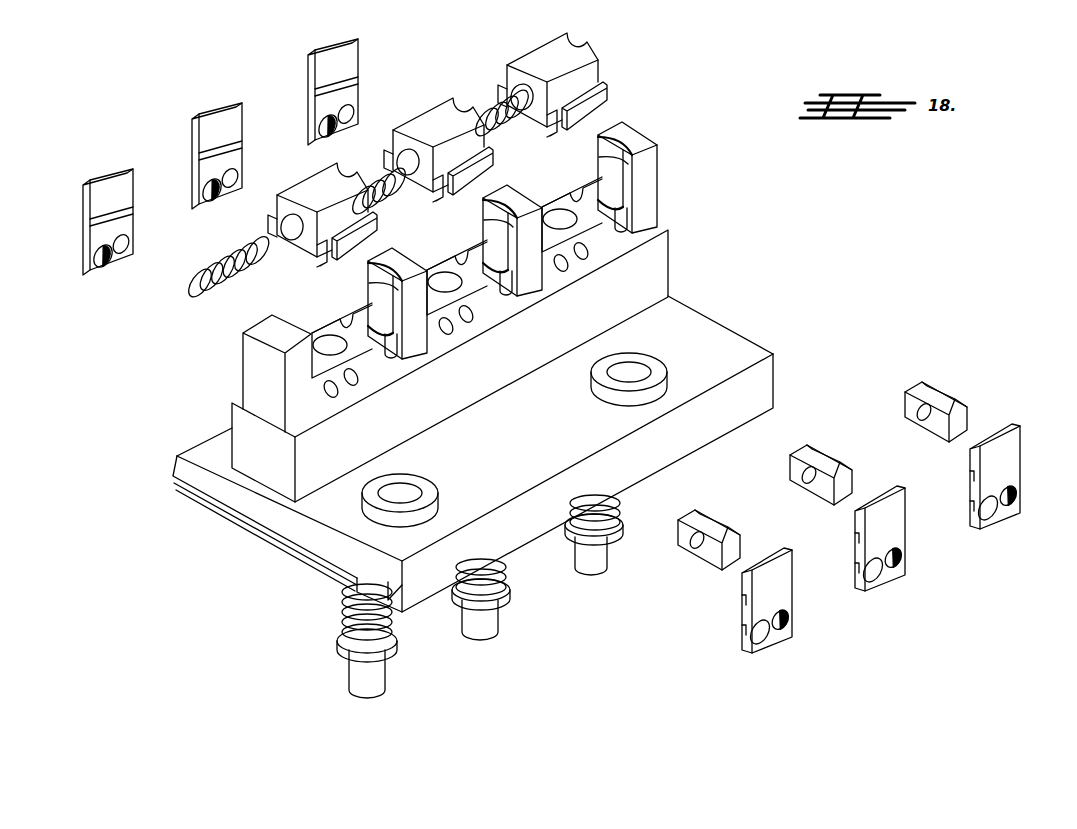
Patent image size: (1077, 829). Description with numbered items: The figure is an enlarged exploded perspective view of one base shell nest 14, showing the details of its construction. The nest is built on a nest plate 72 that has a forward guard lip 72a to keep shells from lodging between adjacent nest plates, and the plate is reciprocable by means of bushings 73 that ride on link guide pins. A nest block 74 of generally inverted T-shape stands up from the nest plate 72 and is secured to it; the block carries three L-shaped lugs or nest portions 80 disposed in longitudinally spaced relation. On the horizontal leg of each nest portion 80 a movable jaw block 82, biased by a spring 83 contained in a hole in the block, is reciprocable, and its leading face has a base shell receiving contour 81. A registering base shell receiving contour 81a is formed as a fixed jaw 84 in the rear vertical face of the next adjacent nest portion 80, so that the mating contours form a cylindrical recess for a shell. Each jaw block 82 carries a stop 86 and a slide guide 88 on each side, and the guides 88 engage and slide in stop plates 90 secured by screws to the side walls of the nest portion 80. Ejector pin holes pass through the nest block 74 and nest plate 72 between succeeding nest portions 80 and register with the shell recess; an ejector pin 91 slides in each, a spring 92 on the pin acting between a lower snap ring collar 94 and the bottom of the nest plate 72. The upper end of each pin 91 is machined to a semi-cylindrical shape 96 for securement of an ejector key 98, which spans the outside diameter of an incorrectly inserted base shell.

The base shell nest 14 is at (731, 313).
The nest plate 72 is at (755, 355).
The forward guard lip 72a is at (230, 497).
The bushing 73 is at (415, 488).
The nest block 74 is at (660, 262).
The L-shaped lug or nest portion 80 is at (275, 330).
The base shell receiving contour 81 is at (350, 322).
The registering base shell receiving contour 81a is at (372, 300).
The movable jaw block 82 is at (305, 190).
The spring 83 is at (198, 295).
The fixed jaw 84 is at (328, 258).
The stop 86 is at (268, 228).
The slide guide 88 is at (360, 240).
The stop plate 90 is at (85, 190).
The ejector pin 91 is at (385, 688).
The spring 92 is at (342, 605).
The snap ring collar 94 is at (340, 650).
The semi-cylindrical shape 96 is at (385, 345).
The ejector key 98 is at (715, 528).